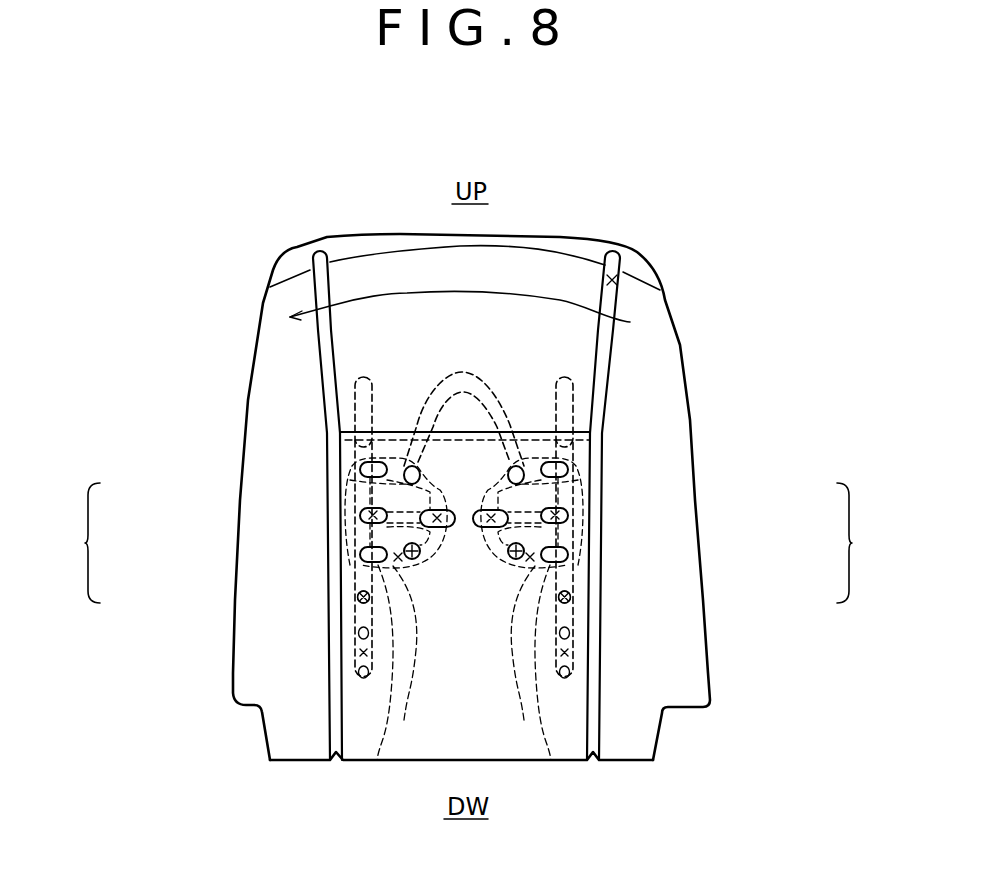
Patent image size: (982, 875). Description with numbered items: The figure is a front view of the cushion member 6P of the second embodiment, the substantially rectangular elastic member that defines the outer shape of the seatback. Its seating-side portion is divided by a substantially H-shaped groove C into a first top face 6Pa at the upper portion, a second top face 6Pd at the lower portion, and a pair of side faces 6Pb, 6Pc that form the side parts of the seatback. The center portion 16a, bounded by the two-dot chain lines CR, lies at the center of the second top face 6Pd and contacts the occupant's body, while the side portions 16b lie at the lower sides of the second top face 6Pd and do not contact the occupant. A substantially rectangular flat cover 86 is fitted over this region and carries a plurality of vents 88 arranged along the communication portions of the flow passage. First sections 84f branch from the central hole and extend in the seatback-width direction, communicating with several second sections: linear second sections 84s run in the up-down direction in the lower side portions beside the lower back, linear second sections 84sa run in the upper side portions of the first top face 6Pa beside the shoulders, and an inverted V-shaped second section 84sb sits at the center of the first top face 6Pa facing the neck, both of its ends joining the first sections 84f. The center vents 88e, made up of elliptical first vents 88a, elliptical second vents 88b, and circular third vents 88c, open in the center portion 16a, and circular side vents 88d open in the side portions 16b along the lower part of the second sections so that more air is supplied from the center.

The cushion member 6P is at (640, 252).
The groove C is at (612, 280).
The first top face 6Pa is at (590, 295).
The side face 6Pb is at (640, 305).
The side face 6Pc is at (630, 322).
The second top face 6Pd is at (460, 467).
The cover 86 is at (593, 432).
The second section 84sb is at (461, 372).
The second section 84sa is at (364, 377).
The second section 84s is at (358, 652).
The first section 84f is at (464, 662).
The vents 88 is at (469, 543).
The first vent 88a is at (352, 488).
The second vent 88b is at (360, 515).
The third vent 88c is at (365, 547).
The side vent 88d is at (358, 597).
The center vents 88e is at (464, 513).
The two-dot chain lines CR is at (349, 470).
The side portion 16b is at (378, 703).
The center portion 16a is at (484, 694).